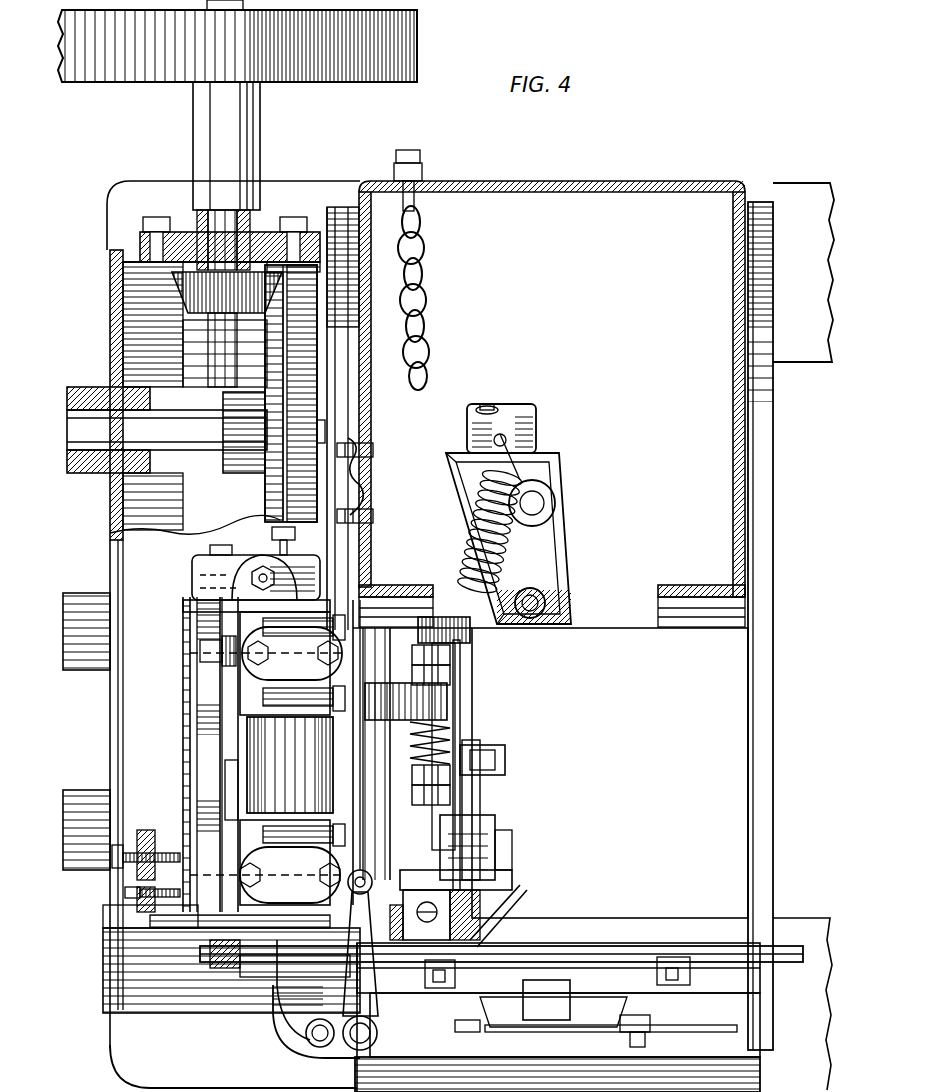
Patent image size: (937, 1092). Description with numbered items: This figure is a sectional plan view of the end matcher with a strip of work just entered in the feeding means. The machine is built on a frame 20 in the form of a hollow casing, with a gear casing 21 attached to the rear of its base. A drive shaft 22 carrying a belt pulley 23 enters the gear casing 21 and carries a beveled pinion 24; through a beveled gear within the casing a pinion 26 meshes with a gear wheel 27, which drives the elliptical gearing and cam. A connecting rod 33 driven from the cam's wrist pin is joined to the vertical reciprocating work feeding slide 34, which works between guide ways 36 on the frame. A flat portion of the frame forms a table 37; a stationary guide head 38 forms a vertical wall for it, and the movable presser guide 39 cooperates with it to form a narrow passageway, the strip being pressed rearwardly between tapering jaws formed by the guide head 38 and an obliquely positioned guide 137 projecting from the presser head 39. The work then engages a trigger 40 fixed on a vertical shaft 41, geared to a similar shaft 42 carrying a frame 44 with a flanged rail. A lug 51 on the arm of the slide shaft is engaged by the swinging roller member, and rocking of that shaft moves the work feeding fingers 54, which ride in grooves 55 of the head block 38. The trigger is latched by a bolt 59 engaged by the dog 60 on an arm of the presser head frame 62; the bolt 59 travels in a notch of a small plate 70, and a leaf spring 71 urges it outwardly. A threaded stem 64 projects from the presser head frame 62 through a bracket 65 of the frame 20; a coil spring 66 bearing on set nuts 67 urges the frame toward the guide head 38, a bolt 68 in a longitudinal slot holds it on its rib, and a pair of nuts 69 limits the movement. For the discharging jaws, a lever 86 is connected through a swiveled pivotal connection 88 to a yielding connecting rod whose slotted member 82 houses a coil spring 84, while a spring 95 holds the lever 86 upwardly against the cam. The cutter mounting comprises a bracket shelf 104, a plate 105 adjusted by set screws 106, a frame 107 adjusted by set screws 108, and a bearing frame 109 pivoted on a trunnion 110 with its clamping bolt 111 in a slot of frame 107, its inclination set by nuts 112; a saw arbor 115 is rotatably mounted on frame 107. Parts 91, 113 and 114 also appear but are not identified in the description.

The frame structure 20 is at (540, 181).
The gear casing 21 is at (110, 352).
The drive shaft 22 is at (213, 230).
The belt pulley 23 is at (362, 82).
The beveled pinion 24 is at (218, 300).
The pinion 26 is at (290, 395).
The gear wheel 27 is at (300, 510).
The connecting rod 33 is at (555, 946).
The work feeding slide 34 is at (596, 1013).
The guide ways 36 is at (505, 1040).
The table 37 is at (725, 858).
The stationary guide head 38 is at (700, 946).
The presser guide 39 is at (482, 925).
The trigger 40 is at (312, 1035).
The vertical shaft 41 is at (358, 1040).
The vertical shaft 42 is at (318, 1040).
The frame 44 is at (290, 1018).
The lug 51 is at (362, 870).
The work feeding fingers 54 is at (672, 957).
The grooves 55 is at (690, 980).
The bolt 59 is at (505, 880).
The latch 60 is at (462, 806).
The presser head frame 62 is at (448, 617).
The threaded stem 64 is at (483, 815).
The bracket 65 is at (440, 702).
The coil spring 66 is at (455, 730).
The set nuts 67 is at (453, 790).
The bolt 68 is at (506, 762).
The nuts 69 is at (452, 660).
The small plate 70 is at (513, 842).
The leaf spring 71 is at (370, 745).
The slotted member 82 is at (566, 545).
The coil spring 84 is at (540, 575).
The lever 86 is at (492, 404).
The swiveled pivotal connection 88 is at (525, 404).
The chain 91 is at (428, 318).
The spring 95 is at (556, 470).
The bracket shelf 104 is at (183, 680).
The plate 105 is at (197, 718).
The set screws 106 is at (158, 845).
The frame 107 is at (205, 625).
The set screws 108 is at (285, 560).
The bearing frame 109 is at (255, 700).
The trunnion 110 is at (240, 820).
The clamping bolt 111 is at (200, 651).
The nuts 112 is at (265, 566).
The clamp cylinder 113 is at (262, 765).
The base 114 is at (180, 1000).
The saw arbor 115 is at (200, 950).
The obliquely positioned guide 137 is at (525, 892).